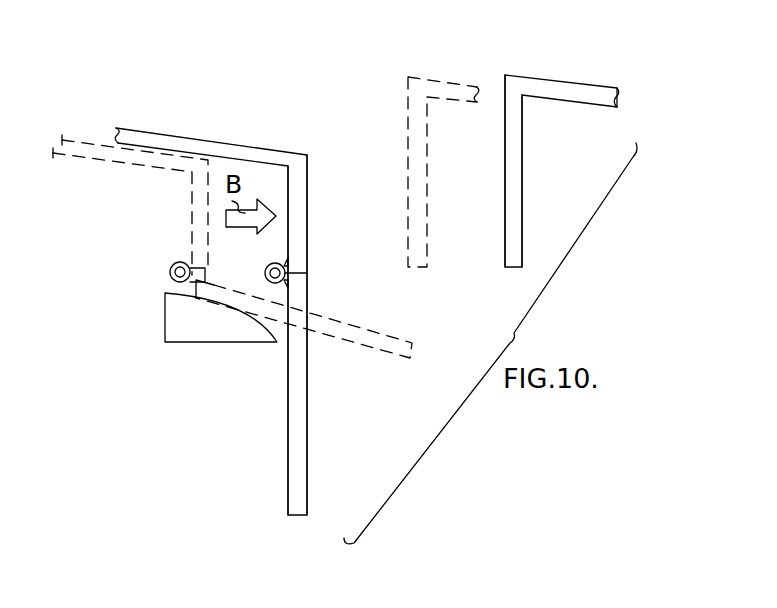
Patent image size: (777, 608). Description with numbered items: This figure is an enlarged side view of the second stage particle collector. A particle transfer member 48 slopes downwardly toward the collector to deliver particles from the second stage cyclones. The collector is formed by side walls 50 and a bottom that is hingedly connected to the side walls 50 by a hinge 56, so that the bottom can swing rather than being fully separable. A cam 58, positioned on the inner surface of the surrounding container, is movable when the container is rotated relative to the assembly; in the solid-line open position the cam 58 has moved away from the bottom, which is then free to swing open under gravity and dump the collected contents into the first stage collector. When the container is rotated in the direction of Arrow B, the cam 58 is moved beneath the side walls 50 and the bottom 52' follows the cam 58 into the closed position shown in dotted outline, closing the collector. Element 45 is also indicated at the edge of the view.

The housing wall 45 is at (173, 0).
The particle transfer member 48 is at (242, 142).
The side walls 50 is at (300, 232).
The bottom 52' is at (304, 363).
The hinge 56 is at (267, 267).
The cam 58 is at (190, 328).